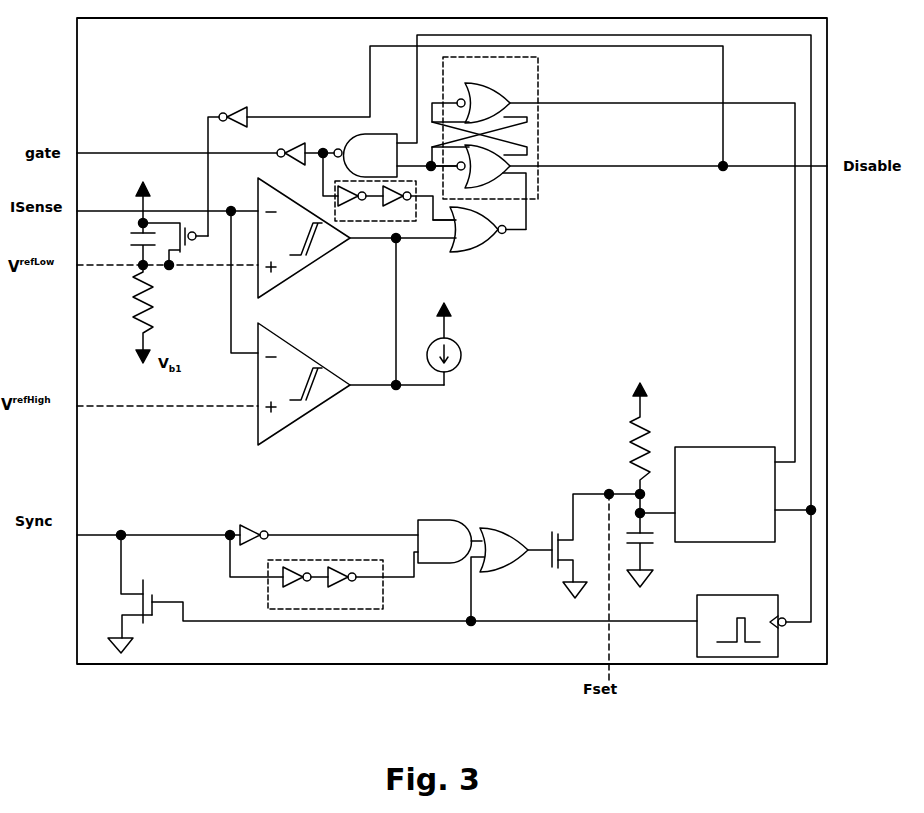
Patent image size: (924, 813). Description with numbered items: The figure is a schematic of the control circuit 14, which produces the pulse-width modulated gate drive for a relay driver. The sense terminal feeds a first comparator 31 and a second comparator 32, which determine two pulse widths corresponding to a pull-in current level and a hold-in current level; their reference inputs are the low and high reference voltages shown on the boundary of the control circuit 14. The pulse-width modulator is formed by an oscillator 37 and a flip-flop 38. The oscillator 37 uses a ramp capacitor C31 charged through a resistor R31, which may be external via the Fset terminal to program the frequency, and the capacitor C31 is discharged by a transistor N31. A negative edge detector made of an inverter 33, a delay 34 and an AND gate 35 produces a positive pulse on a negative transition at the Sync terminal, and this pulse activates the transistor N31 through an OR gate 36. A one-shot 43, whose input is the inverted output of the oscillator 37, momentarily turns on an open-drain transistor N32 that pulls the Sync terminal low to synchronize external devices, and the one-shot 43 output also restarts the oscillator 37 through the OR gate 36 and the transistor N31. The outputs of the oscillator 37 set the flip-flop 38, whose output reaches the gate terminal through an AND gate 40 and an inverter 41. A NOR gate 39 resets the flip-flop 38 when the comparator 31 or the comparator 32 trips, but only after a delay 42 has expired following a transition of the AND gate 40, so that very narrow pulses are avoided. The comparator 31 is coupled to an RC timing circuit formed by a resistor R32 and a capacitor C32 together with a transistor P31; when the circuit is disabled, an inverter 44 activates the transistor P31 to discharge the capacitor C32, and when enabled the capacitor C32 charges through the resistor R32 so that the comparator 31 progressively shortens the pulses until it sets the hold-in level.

The control circuit 14 is at (452, 341).
The first comparator 31 is at (329, 238).
The second comparator 32 is at (351, 341).
The inverter 33 is at (268, 519).
The delay 34 is at (324, 572).
The AND gate 35 is at (450, 541).
The OR gate 36 is at (510, 577).
The oscillator 37 is at (728, 494).
The flip-flop 38 is at (613, 259).
The NOR gate 39 is at (461, 245).
The AND gate 40 is at (572, 328).
The inverter 41 is at (298, 150).
The delay 42 is at (389, 187).
The one-shot 43 is at (741, 626).
The inverter 44 is at (238, 108).
The ramp capacitor C31 is at (658, 560).
The capacitor C32 is at (122, 246).
The resistor R31 is at (616, 458).
The resistor R32 is at (122, 314).
The transistor P31 is at (175, 259).
The transistor N31 is at (591, 535).
The transistor N32 is at (402, 594).